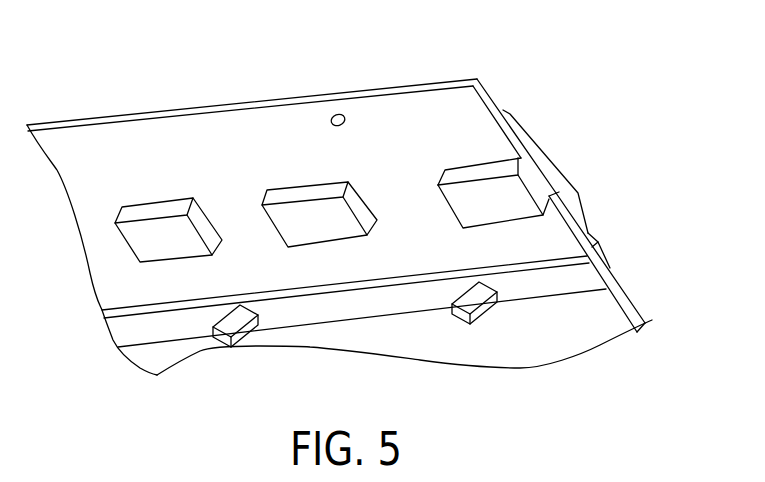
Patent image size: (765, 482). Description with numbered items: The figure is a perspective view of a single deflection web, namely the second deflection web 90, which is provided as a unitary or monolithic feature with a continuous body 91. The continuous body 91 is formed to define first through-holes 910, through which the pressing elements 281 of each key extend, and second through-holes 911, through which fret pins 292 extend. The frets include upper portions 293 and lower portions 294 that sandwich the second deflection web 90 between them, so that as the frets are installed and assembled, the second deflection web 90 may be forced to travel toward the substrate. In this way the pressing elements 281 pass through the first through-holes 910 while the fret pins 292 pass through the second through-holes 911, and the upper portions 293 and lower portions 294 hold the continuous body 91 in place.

The second deflection web 90 is at (344, 203).
The continuous body 91 is at (485, 122).
The first through-holes 910 is at (332, 190).
The pressing elements 281 is at (305, 220).
The second through-holes 911 is at (208, 316).
The fret pins 292 is at (215, 338).
The upper portions 293 is at (598, 242).
The lower portions 294 is at (608, 268).